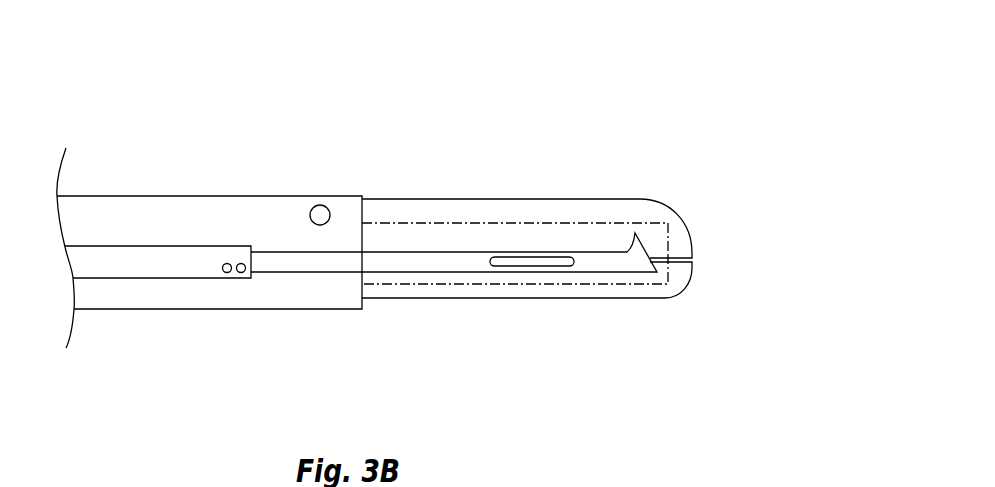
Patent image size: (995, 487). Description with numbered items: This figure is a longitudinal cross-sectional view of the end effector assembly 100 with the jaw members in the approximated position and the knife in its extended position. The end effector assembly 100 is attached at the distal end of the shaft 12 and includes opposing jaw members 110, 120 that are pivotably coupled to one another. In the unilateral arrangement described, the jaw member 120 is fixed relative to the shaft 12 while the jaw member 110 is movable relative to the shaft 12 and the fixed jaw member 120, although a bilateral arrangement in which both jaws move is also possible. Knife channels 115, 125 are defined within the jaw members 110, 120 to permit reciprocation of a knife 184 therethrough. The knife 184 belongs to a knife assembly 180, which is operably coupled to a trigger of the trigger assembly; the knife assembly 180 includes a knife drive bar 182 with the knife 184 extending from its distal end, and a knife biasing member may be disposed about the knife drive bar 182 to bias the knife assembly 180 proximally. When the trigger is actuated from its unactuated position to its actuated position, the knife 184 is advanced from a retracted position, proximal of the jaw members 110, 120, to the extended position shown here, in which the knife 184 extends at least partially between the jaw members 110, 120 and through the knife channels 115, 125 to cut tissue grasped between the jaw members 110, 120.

The shaft 12 is at (120, 196).
The end effector assembly 100 is at (573, 215).
The jaw member 110 is at (567, 195).
The knife channel 115 is at (527, 230).
The jaw member 120 is at (573, 312).
The knife channel 125 is at (542, 284).
The knife assembly 180 is at (230, 284).
The knife drive bar 182 is at (128, 278).
The knife 184 is at (313, 262).